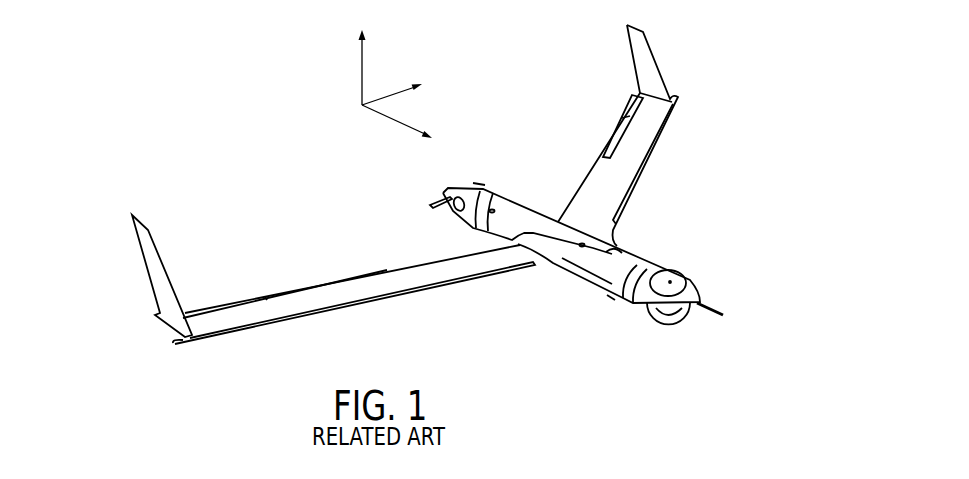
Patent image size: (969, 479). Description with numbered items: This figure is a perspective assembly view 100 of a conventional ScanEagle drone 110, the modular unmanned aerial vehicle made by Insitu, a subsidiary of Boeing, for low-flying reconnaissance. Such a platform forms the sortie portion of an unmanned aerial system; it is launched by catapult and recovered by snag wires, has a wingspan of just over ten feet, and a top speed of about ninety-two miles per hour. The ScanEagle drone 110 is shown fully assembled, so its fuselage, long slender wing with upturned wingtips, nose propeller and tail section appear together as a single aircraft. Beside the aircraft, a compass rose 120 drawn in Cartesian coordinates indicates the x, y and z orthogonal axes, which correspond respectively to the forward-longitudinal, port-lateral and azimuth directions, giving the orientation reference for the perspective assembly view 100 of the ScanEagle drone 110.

The perspective assembly view 100 is at (240, 82).
The ScanEagle drone 110 is at (82, 0).
The compass rose 120 is at (363, 102).